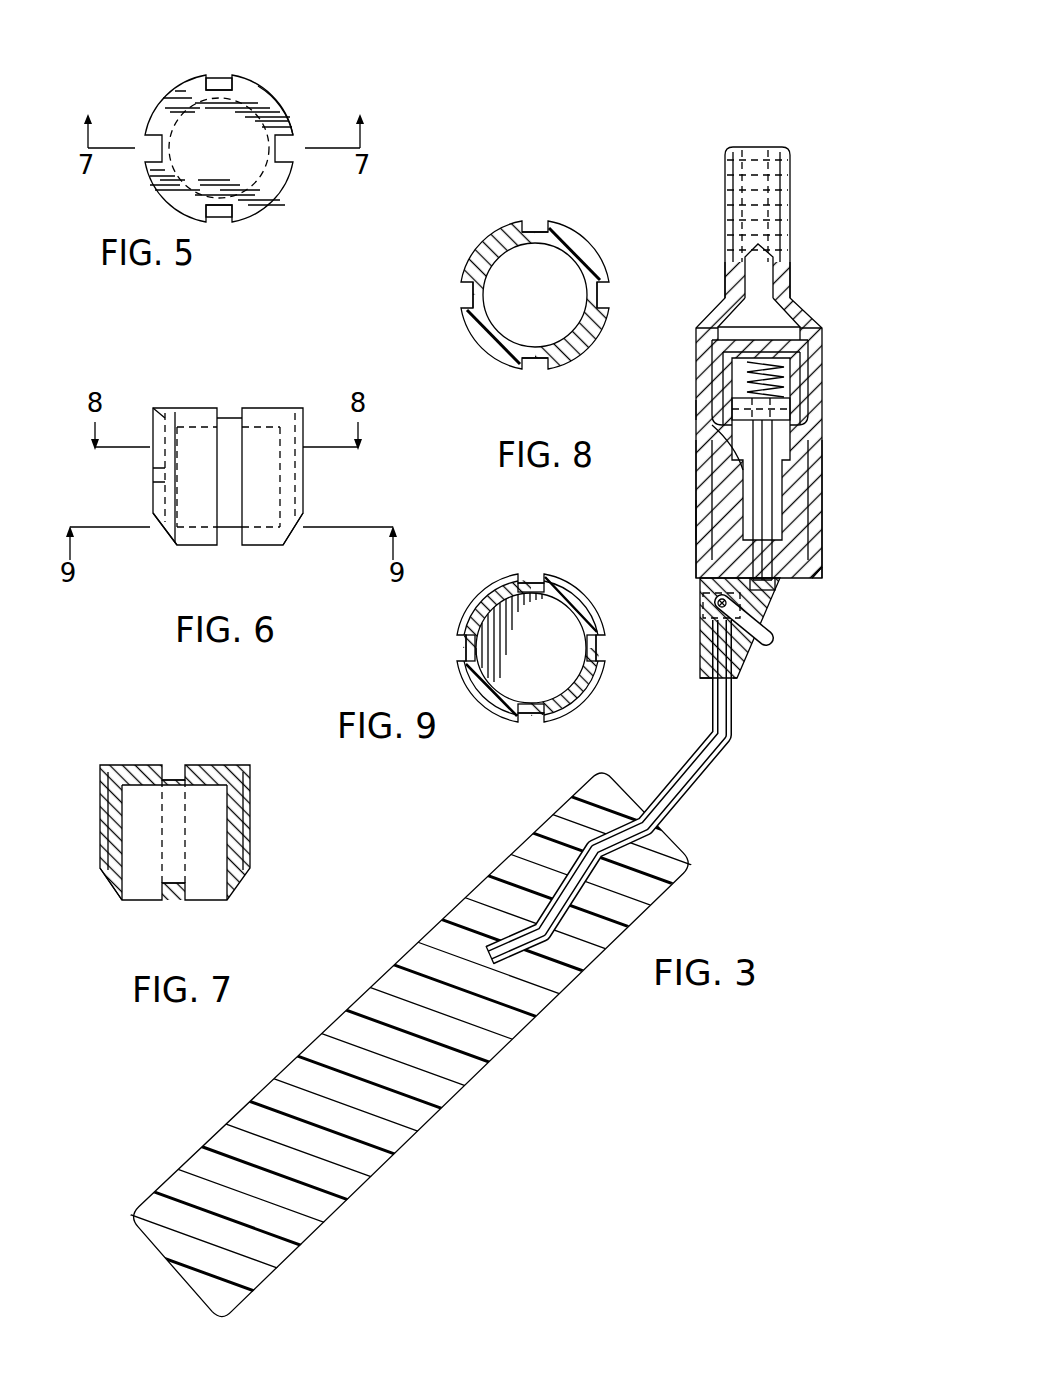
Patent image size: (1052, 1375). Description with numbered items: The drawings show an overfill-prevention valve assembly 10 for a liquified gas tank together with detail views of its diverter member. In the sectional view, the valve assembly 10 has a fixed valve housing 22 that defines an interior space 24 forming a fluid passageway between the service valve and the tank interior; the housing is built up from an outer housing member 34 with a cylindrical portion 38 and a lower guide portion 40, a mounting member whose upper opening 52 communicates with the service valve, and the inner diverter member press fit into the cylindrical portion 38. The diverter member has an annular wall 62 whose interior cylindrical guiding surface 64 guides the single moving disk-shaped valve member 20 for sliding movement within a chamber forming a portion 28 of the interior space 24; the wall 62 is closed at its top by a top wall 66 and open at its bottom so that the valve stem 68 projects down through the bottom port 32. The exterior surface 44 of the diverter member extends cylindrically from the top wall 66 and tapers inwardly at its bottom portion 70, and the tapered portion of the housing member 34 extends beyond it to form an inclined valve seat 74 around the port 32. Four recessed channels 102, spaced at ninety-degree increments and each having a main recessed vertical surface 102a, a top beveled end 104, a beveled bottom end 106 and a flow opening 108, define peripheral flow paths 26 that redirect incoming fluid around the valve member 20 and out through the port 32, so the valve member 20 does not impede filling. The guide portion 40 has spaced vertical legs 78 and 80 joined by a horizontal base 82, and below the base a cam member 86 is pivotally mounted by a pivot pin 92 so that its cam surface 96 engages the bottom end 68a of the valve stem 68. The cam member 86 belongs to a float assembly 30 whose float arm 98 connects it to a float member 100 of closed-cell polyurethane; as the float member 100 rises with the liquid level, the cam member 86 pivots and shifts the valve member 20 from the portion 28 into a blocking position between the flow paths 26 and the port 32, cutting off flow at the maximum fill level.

In FIG. 3, the valve assembly 10 is at (821, 264).
In FIG. 3, the valve member 20 is at (732, 427).
In FIG. 3, the valve housing 22 is at (682, 406).
In FIG. 3, the interior space 24 is at (785, 328).
In FIG. 3, the flow paths 26 is at (718, 372).
In FIG. 3, the interior space portion 28 is at (733, 393).
In FIG. 3, the float assembly 30 is at (848, 673).
In FIG. 3, the port 32 is at (808, 433).
In FIG. 5, the outer housing member 34 is at (137, 106).
In FIG. 3, the cylindrical portion 38 is at (830, 404).
In FIG. 3, the guide portion 40 is at (686, 517).
In FIG. 5, the exterior surface 44 is at (288, 110).
In FIG. 6, the exterior surface 44 is at (153, 505).
In FIG. 3, the upper opening 52 is at (762, 147).
In FIG. 7, the annular wall 62 is at (115, 825).
In FIG. 8, the annular wall 62 is at (574, 246).
In FIG. 8, the interior cylindrical guiding surface 64 is at (500, 268).
In FIG. 5, the top wall 66 is at (260, 96).
In FIG. 6, the top wall 66 is at (263, 408).
In FIG. 3, the valve stem 68 is at (768, 500).
In FIG. 3, the bottom end 68a is at (768, 590).
In FIG. 6, the bottom portion 70 is at (298, 533).
In FIG. 8, the bottom portion 70 is at (490, 358).
In FIG. 3, the inclined valve seat 74 is at (740, 457).
In FIG. 3, the leg 78 is at (706, 545).
In FIG. 3, the leg 80 is at (808, 543).
In FIG. 3, the horizontal base 82 is at (812, 575).
In FIG. 3, the cam member 86 is at (745, 652).
In FIG. 3, the pivot pin 92 is at (712, 598).
In FIG. 3, the cam surface 96 is at (730, 570).
In FIG. 3, the float arm 98 is at (735, 765).
In FIG. 3, the float member 100 is at (445, 1112).
In FIG. 5, the recessed channels 102 is at (218, 70).
In FIG. 8, the recessed channels 102 is at (532, 220).
In FIG. 6, the main recessed vertical surface 102a is at (155, 476).
In FIG. 5, the top beveled end 104 is at (221, 213).
In FIG. 6, the top beveled end 104 is at (162, 412).
In FIG. 7, the top beveled end 104 is at (104, 768).
In FIG. 6, the beveled bottom end 106 is at (168, 545).
In FIG. 7, the beveled bottom end 106 is at (112, 878).
In FIG. 9, the beveled bottom end 106 is at (530, 580).
In FIG. 7, the flow opening 108 is at (176, 888).